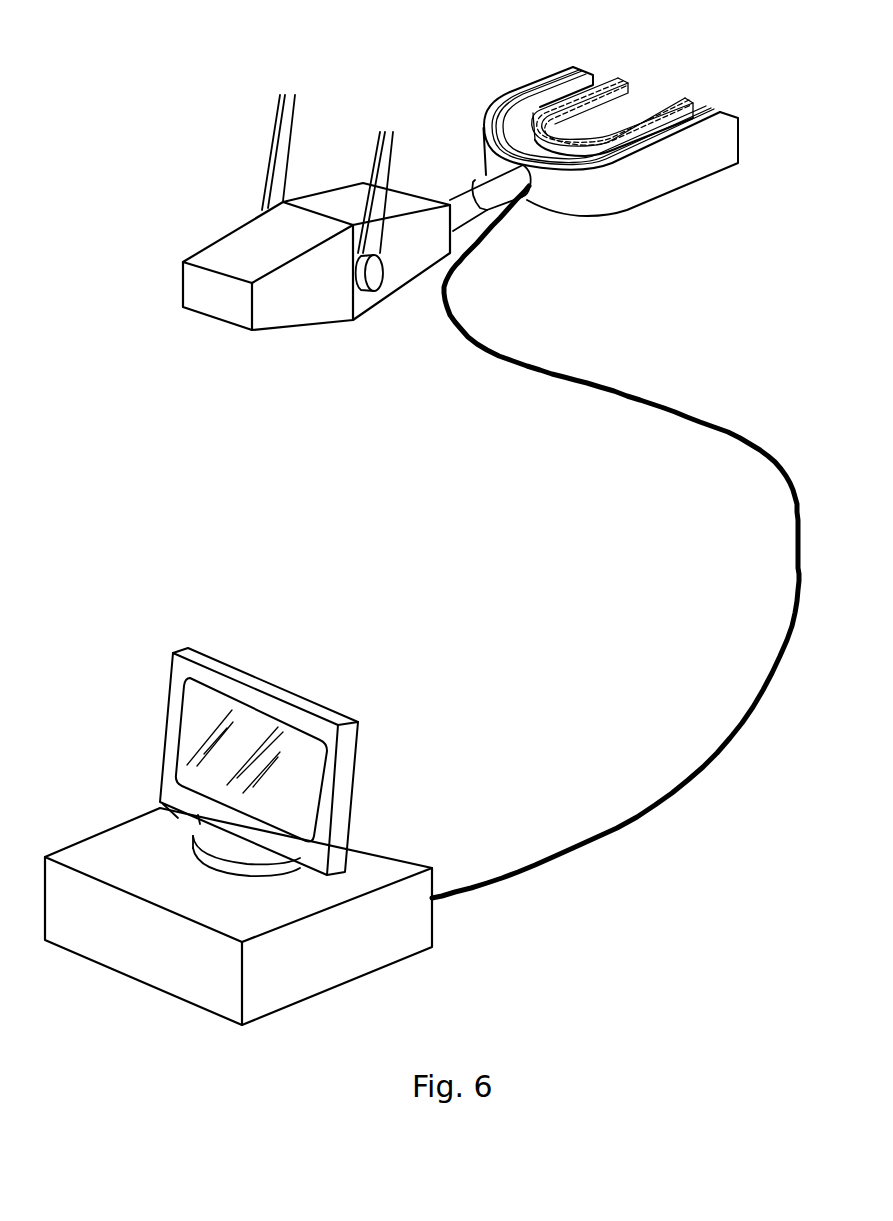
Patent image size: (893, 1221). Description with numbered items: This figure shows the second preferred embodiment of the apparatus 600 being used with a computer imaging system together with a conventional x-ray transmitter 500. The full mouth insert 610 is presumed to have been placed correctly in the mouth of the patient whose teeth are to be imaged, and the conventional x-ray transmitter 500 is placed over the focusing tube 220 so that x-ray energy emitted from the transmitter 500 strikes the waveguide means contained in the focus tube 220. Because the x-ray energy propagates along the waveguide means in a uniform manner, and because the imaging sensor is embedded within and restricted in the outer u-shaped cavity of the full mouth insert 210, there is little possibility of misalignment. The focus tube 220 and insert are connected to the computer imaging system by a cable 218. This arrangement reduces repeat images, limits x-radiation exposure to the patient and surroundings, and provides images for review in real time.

The full mouth insert 210 is at (657, 182).
The cable 218 is at (687, 420).
The focusing tube 220 is at (498, 185).
The conventional x-ray transmitter 500 is at (230, 248).
The apparatus 600 is at (320, 970).
The full mouth insert 610 is at (172, 727).